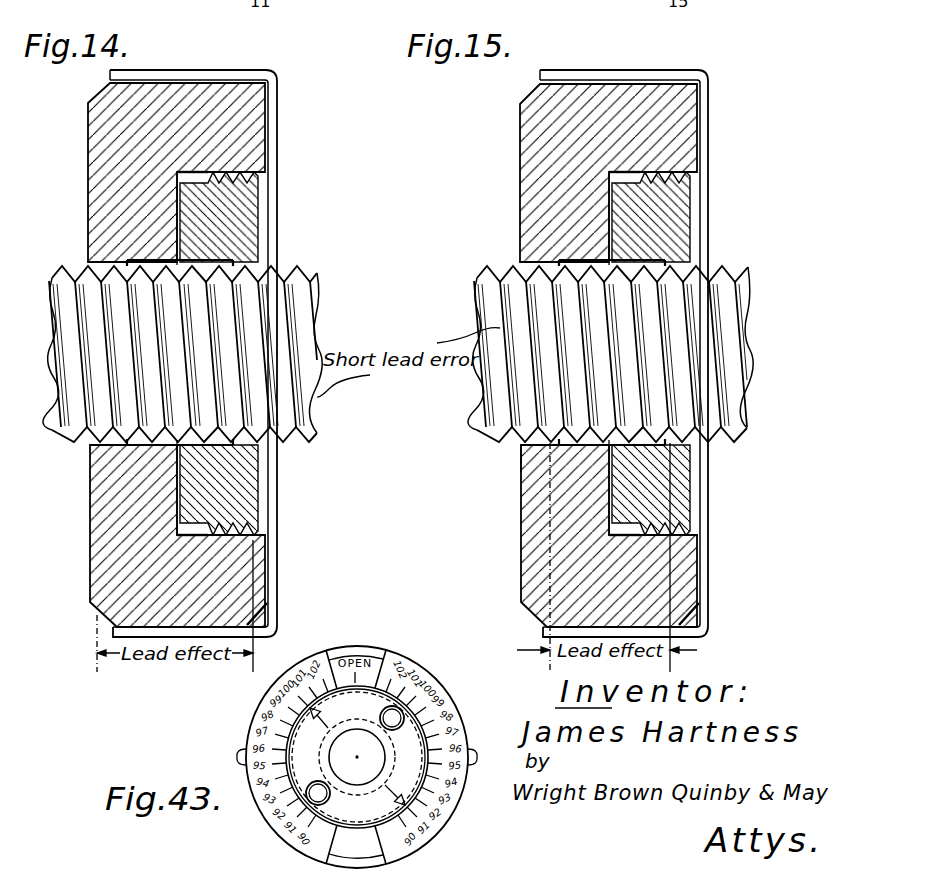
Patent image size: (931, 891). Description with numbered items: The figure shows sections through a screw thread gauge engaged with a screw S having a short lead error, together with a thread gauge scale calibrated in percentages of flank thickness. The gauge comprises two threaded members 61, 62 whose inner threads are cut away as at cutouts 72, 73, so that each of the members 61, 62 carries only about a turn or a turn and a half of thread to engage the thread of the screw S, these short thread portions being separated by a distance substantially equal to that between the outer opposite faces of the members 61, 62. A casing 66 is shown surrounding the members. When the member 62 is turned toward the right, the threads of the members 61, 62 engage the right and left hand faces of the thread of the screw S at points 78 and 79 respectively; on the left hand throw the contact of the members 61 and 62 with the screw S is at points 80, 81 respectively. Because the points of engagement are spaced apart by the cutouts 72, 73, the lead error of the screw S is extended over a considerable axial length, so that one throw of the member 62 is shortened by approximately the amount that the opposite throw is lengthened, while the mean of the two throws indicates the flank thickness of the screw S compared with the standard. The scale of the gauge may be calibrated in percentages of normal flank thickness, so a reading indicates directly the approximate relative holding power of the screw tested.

In FIG. 14, the member 61 is at (137, 153).
In FIG. 15, the member 61 is at (575, 173).
In FIG. 14, the member 62 is at (237, 225).
In FIG. 15, the member 62 is at (691, 218).
In FIG. 14, the shell / casing 66 is at (272, 137).
In FIG. 15, the shell / casing 66 is at (646, 353).
In FIG. 14, the cutout 72 is at (153, 268).
In FIG. 15, the cutout 72 is at (567, 239).
In FIG. 14, the cutout 73 is at (210, 260).
In FIG. 15, the cutout 73 is at (663, 329).
In FIG. 14, the point 78 is at (83, 277).
In FIG. 14, the point 79 is at (235, 438).
In FIG. 15, the point 80 is at (503, 463).
In FIG. 15, the point 81 is at (687, 487).
In FIG. 14, the screw S is at (281, 317).
In FIG. 15, the screw S is at (631, 354).